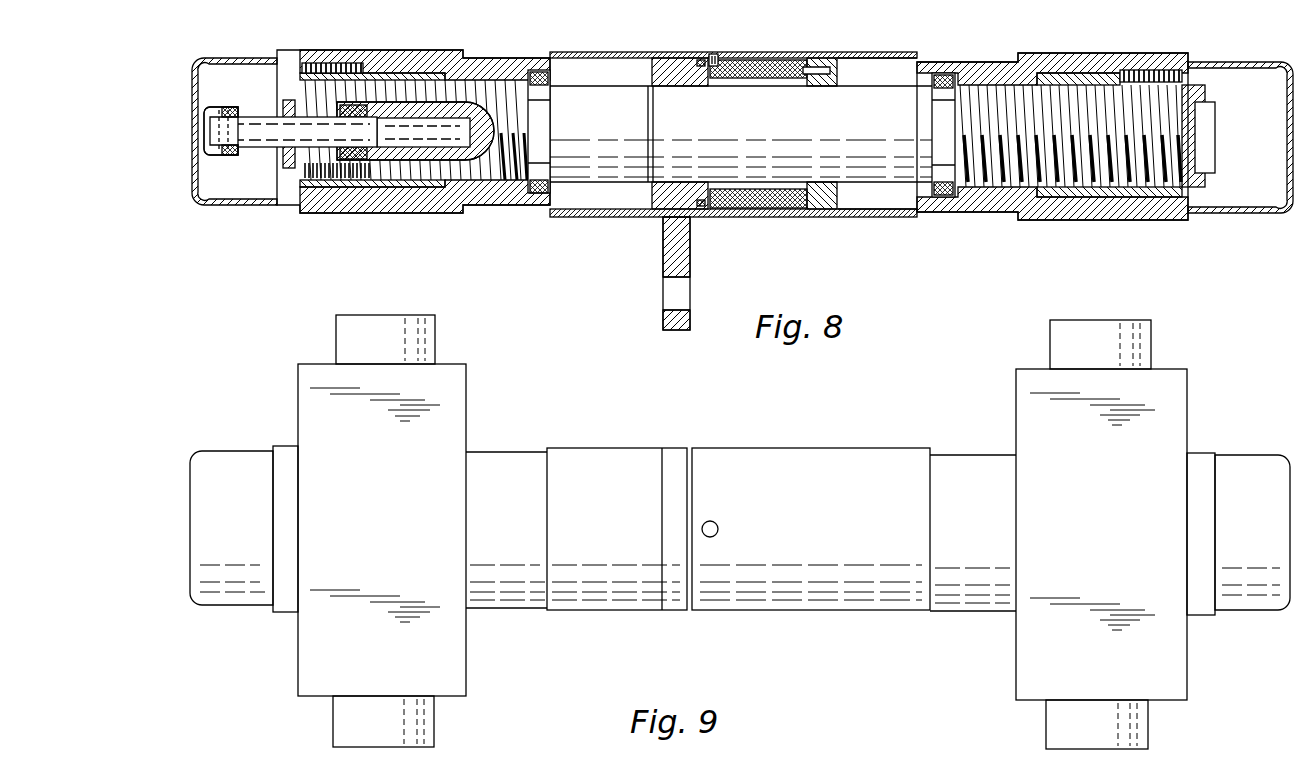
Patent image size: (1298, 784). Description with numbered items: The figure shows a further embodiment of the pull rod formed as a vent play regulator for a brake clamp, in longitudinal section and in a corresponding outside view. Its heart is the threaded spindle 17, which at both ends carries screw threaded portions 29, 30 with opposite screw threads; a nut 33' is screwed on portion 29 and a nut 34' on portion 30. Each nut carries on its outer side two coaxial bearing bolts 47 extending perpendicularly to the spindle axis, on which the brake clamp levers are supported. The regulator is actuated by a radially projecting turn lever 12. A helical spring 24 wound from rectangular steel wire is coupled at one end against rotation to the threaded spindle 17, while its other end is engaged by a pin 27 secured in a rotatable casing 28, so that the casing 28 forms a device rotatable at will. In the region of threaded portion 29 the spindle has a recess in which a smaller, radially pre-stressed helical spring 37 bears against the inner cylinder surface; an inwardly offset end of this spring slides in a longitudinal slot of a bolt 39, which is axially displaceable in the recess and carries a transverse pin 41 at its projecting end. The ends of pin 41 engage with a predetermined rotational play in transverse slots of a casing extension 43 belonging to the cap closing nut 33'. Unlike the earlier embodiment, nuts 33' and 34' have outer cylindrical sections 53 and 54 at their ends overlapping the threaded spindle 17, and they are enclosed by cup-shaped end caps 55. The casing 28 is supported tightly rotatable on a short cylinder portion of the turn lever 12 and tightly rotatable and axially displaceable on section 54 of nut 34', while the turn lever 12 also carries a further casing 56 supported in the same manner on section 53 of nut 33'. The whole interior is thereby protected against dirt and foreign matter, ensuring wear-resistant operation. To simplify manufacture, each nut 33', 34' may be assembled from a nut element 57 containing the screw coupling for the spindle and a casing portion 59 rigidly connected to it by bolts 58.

In FIG. 8, the turn lever 12 is at (662, 322).
In FIG. 8, the threaded spindle 17 is at (896, 166).
In FIG. 8, the helical spring 24 is at (766, 208).
In FIG. 8, the pin 27 is at (714, 54).
In FIG. 8, the casing 28 is at (880, 218).
In FIG. 9, the casing 28 is at (800, 462).
In FIG. 8, the screw threaded portion 29 is at (492, 166).
In FIG. 8, the screw threaded portion 30 is at (1042, 168).
In FIG. 8, the nut 33' is at (413, 163).
In FIG. 8, the nut 34' is at (1052, 169).
In FIG. 8, the helical spring 37 is at (346, 196).
In FIG. 8, the bolt 39 is at (264, 148).
In FIG. 8, the transverse pin 41 is at (228, 158).
In FIG. 8, the casing extension 43 is at (244, 104).
In FIG. 9, the bearing bolts 47 is at (336, 338).
In FIG. 8, the outer cylindrical section 53 is at (526, 196).
In FIG. 9, the outer cylindrical section 53 is at (510, 462).
In FIG. 8, the outer cylindrical section 54 is at (964, 204).
In FIG. 9, the outer cylindrical section 54 is at (966, 464).
In FIG. 8, the cup-shaped end cap 55 is at (218, 206).
In FIG. 9, the cup-shaped end cap 55 is at (226, 460).
In FIG. 8, the further casing 56 is at (586, 218).
In FIG. 9, the further casing 56 is at (600, 462).
In FIG. 8, the nut element 57 is at (412, 196).
In FIG. 8, the bolts 58 is at (324, 62).
In FIG. 8, the casing portion 59 is at (374, 206).